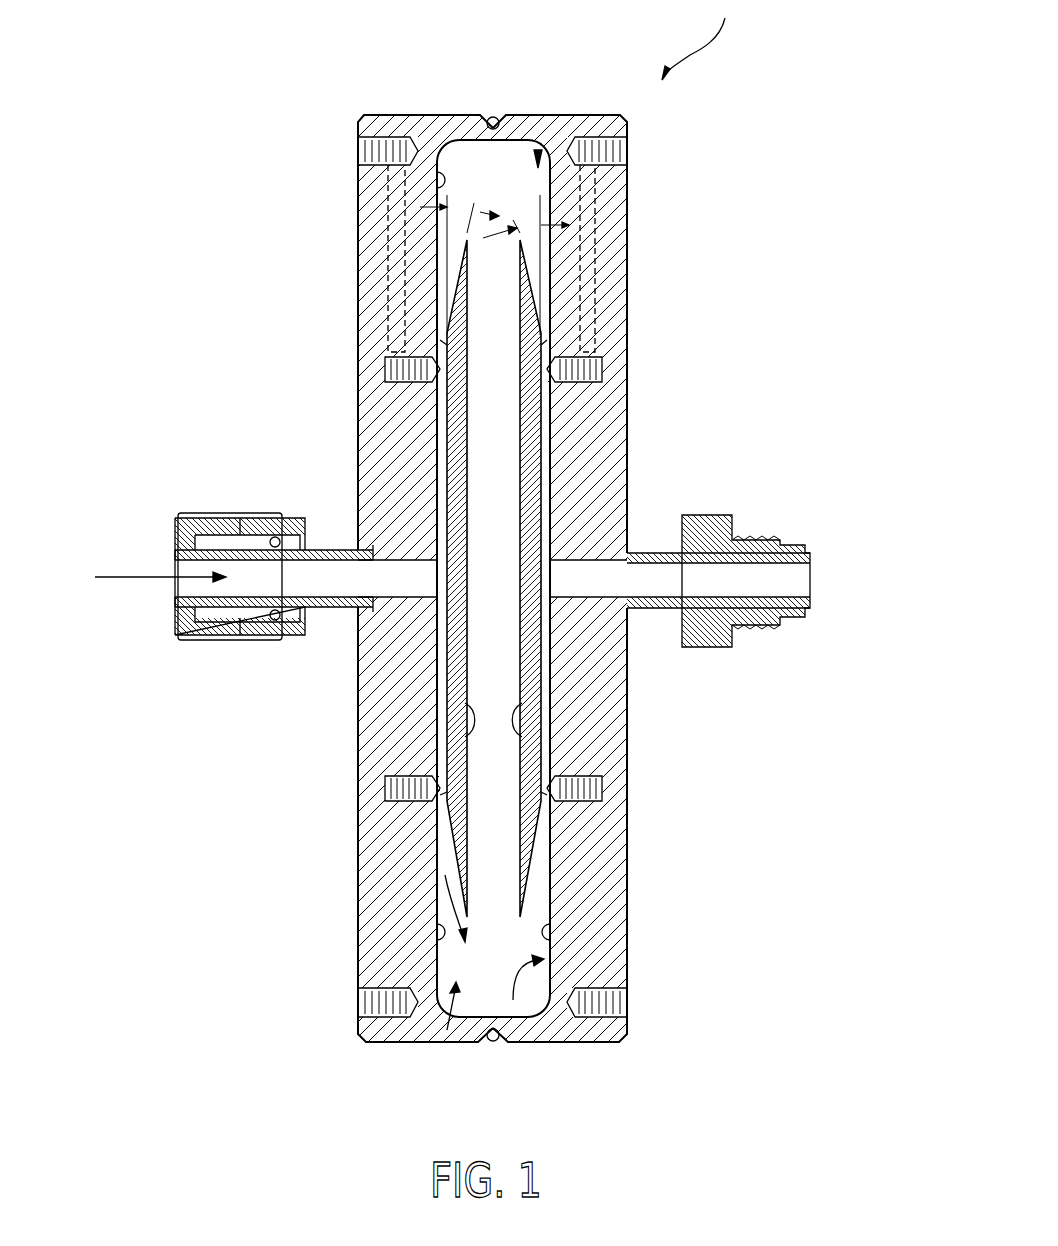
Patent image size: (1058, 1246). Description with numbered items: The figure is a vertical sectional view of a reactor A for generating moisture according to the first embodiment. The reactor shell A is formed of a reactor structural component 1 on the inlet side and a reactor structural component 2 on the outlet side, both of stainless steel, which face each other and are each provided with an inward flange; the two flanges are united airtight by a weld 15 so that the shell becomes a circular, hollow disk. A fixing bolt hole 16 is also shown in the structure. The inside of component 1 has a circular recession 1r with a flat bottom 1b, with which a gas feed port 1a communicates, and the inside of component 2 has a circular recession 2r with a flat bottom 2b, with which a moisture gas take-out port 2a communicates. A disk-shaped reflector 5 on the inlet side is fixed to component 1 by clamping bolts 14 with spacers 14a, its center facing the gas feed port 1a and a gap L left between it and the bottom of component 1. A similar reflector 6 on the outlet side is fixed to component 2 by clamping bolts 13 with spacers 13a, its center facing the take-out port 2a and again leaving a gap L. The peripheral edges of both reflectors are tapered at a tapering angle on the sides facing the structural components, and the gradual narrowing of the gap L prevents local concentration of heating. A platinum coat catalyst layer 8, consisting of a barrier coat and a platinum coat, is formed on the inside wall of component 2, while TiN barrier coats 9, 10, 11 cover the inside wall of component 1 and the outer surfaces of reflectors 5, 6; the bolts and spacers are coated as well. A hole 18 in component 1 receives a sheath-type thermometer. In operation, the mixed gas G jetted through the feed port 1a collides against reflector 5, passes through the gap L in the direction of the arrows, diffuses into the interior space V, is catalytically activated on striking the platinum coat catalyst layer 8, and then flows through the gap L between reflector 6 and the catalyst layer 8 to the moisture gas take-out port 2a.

The reactor structural component on the inlet side 1 is at (385, 430).
The reactor structural component on the outlet side 2 is at (597, 432).
The gas feed port 1a is at (248, 578).
The moisture gas take-out port 2a is at (742, 582).
The bottom of the circular recession on the inlet side 1b is at (435, 172).
The circular recession on the inlet side 1r is at (447, 1030).
The circular recession on the outlet side 2r is at (538, 150).
The bottom of the circular recession on the outlet side 2b is at (513, 1000).
The reflector on the inlet side 5 is at (455, 485).
The reflector on the outlet side 6 is at (538, 486).
The platinum coat catalyst layer 8 is at (550, 940).
The barrier coat on the inside wall on the inlet side of the reactor structural comp 9 is at (437, 934).
The barrier coat on the outer surface of the reflector on the inlet side 10 is at (445, 742).
The barrier coating on the outer surface on the outlet side 11 is at (543, 752).
The clamping bolt 13 is at (602, 370).
The spacer 13a is at (548, 350).
The clamping bolt 14 is at (385, 365).
The spacer 14a is at (440, 340).
The welding 15 is at (492, 114).
The fixing bolt hole 16 is at (360, 122).
The hole for mounting the sheath-type thermometer 18 is at (388, 300).
The reactor A is at (698, 40).
The mixed gas G is at (140, 575).
The interior space V is at (495, 200).
The gap L is at (450, 655).